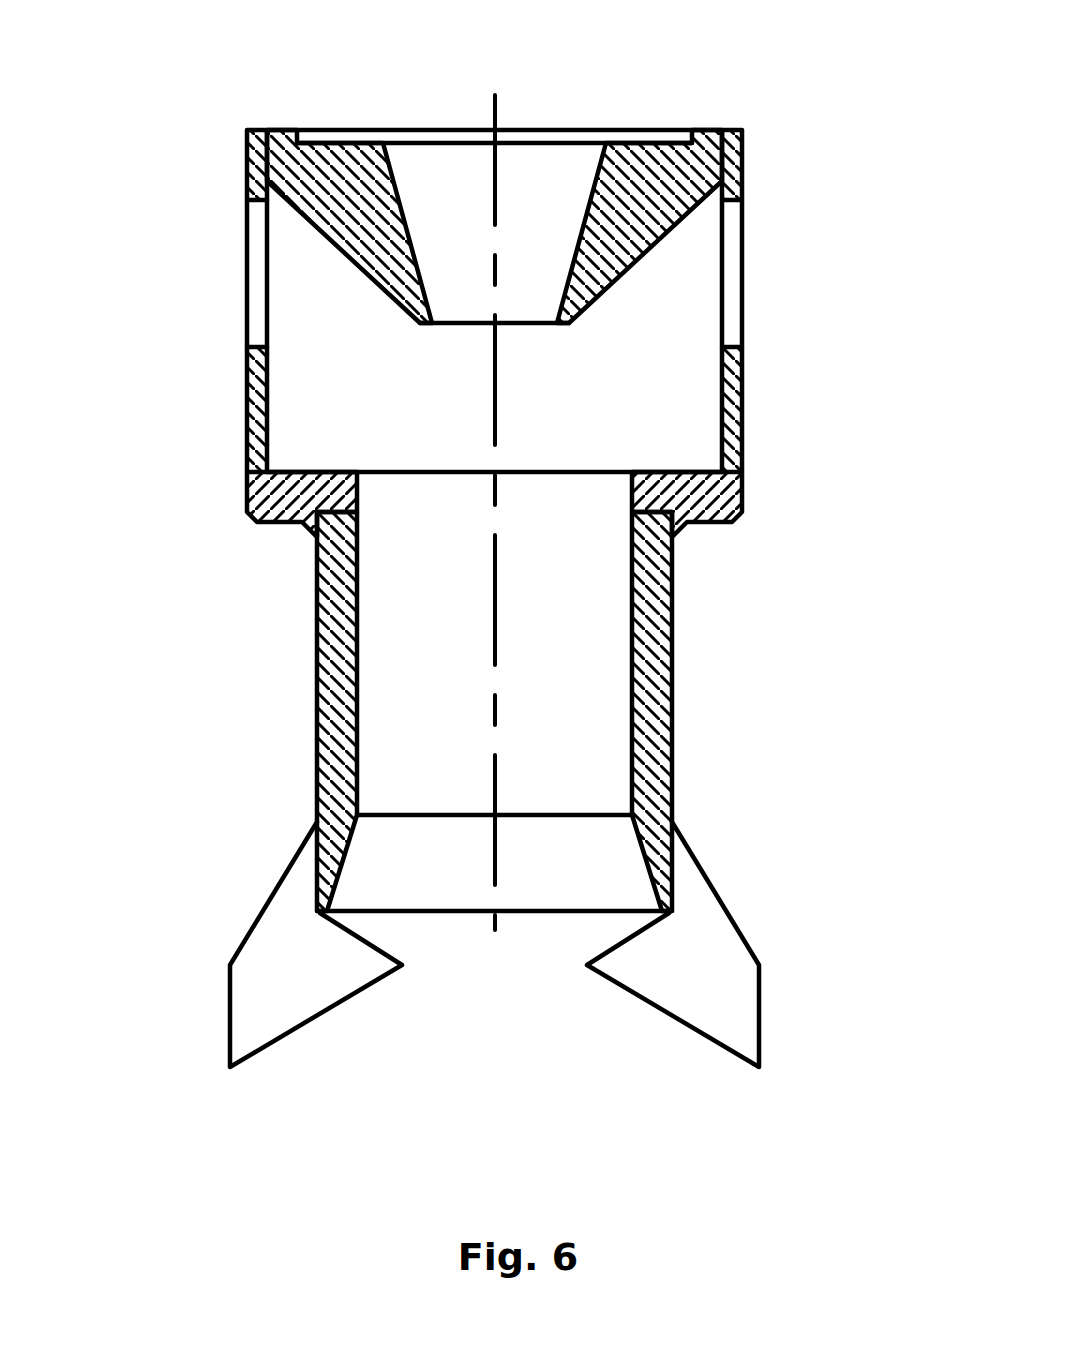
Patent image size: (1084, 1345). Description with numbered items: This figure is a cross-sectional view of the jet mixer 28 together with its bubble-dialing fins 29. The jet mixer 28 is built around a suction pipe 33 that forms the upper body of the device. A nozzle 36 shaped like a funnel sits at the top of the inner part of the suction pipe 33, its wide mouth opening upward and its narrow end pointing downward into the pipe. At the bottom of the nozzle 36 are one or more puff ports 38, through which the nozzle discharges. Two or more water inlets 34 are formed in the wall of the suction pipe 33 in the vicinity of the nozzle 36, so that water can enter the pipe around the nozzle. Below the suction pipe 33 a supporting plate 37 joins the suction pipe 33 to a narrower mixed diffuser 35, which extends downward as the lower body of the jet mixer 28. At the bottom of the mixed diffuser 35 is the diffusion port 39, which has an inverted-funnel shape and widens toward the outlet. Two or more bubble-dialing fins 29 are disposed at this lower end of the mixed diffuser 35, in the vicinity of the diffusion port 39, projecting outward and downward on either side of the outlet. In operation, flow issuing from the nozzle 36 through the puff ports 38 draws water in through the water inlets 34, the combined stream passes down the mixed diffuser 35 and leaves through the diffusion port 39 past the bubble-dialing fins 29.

The jet mixer 28 is at (141, 130).
The bubble-dialing fins 29 is at (870, 965).
The suction pipe 33 is at (742, 390).
The water inlets 34 is at (913, 277).
The mixed diffuser 35 is at (650, 768).
The nozzle 36 is at (300, 160).
The supporting plate 37 is at (700, 493).
The puff ports 38 is at (467, 323).
The diffusion port 39 is at (523, 900).